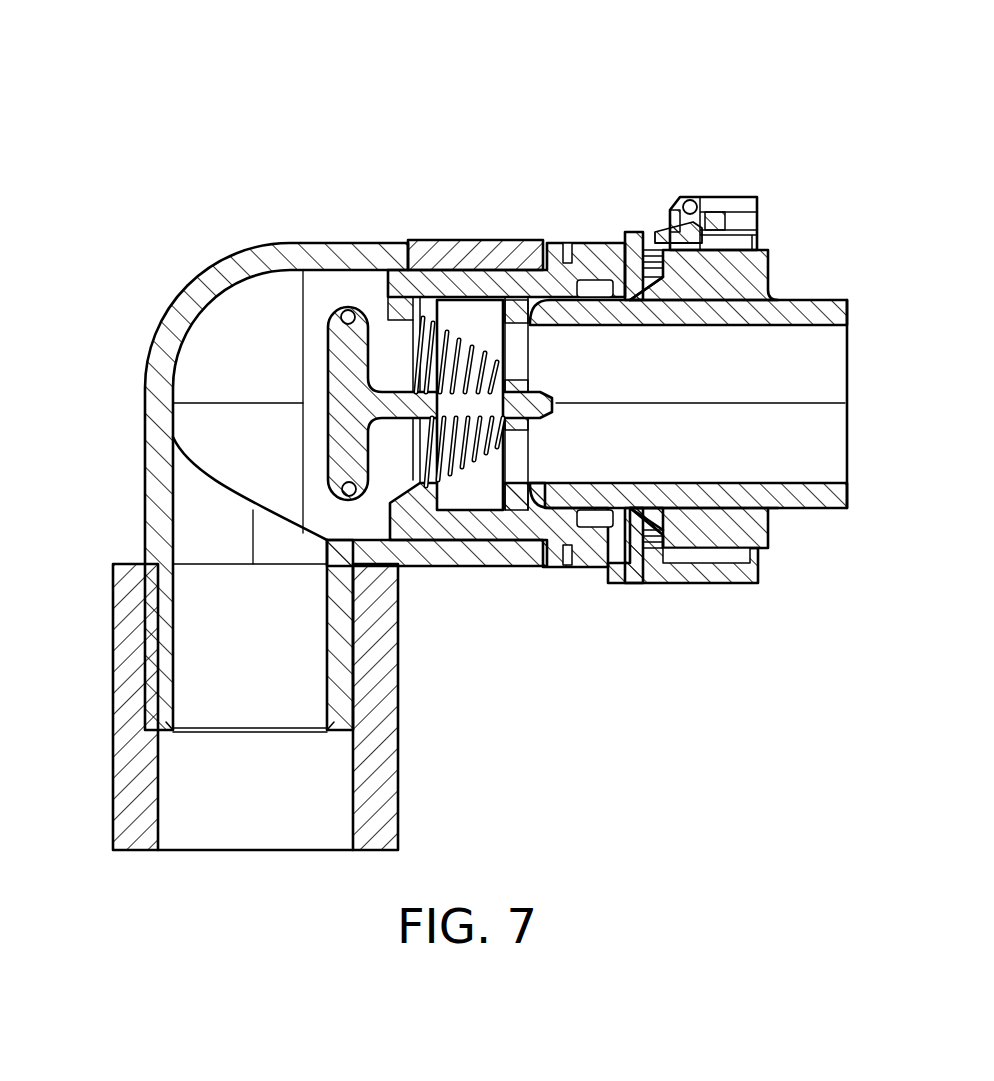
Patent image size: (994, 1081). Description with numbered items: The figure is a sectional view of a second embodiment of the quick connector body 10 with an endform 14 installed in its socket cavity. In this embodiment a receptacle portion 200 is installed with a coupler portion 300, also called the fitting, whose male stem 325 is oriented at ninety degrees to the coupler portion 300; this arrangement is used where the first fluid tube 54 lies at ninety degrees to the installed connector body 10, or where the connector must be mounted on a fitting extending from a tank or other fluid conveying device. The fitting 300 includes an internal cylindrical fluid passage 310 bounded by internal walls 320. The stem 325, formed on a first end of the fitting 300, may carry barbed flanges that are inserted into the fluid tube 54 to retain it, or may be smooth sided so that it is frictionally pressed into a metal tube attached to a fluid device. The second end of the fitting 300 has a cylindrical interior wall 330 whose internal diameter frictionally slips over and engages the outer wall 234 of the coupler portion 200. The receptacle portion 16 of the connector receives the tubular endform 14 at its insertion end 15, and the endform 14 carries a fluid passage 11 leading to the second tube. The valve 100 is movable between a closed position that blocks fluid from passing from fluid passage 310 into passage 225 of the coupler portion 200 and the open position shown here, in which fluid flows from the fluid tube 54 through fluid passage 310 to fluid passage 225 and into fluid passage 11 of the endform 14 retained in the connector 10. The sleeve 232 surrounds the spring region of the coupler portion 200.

The quick connector body 10 is at (290, 58).
The fluid passage 11 is at (812, 378).
The endform 14 is at (815, 300).
The insertion end 15 is at (556, 485).
The receptacle portion 16 is at (728, 197).
The first fluid tube 54 is at (118, 683).
The valve 100 is at (300, 303).
The receptacle portion 200 is at (578, 580).
The fluid passage 225 is at (468, 300).
The sleeve 232 is at (514, 250).
The outer wall 234 is at (422, 268).
The coupler portion 300 is at (192, 288).
The internal cylindrical fluid passage 310 is at (218, 608).
The internal walls 320 is at (150, 392).
The male stem 325 is at (355, 688).
The cylindrical interior wall 330 is at (460, 550).